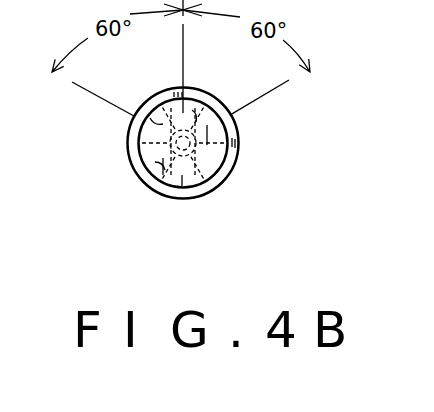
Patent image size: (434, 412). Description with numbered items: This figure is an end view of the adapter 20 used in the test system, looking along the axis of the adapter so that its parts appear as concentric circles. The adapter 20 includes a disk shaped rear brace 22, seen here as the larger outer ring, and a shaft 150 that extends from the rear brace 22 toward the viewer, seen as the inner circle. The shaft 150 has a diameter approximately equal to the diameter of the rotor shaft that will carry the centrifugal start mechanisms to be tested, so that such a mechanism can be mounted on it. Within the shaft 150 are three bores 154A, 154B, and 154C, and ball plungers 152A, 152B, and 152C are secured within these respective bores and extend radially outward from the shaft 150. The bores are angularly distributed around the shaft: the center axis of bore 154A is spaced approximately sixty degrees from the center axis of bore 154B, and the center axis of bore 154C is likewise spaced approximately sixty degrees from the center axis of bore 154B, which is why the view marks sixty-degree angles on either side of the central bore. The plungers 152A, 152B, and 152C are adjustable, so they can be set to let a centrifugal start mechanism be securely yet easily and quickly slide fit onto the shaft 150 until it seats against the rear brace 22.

The adapter 20 is at (88, 153).
The rear brace 22 is at (240, 131).
The shaft 150 is at (208, 99).
The ball plunger 152A is at (152, 160).
The ball plunger 152B is at (182, 175).
The ball plunger 152C is at (222, 163).
The bore 154A is at (163, 158).
The bore 154B is at (190, 112).
The bore 154C is at (153, 120).